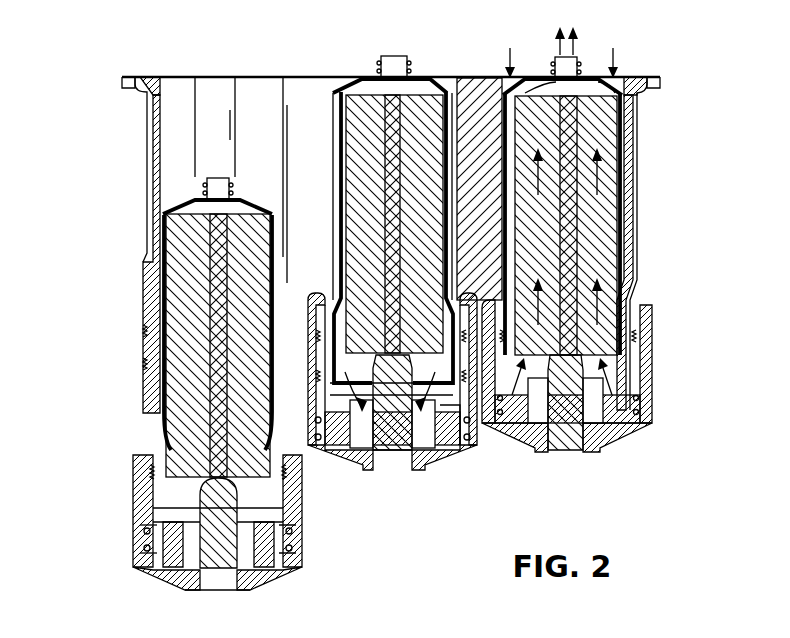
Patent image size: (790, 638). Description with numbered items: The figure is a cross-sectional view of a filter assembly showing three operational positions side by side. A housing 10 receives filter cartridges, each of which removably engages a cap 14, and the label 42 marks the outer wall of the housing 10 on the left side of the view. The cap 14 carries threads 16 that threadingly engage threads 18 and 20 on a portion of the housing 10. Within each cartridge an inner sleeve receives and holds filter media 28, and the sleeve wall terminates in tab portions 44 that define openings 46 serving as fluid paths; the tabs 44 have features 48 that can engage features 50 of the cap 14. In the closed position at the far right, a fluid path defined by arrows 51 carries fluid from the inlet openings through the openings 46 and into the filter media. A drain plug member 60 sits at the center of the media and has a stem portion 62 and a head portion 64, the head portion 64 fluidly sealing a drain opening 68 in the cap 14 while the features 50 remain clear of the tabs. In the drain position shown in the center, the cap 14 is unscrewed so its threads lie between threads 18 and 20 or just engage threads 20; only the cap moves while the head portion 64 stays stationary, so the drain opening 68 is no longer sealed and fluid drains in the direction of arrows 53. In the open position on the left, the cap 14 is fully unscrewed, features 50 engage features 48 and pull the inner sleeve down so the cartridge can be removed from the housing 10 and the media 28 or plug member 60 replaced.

The housing 10 is at (640, 249).
The cap 14 is at (300, 567).
The threads 16 is at (292, 494).
The threads 18 is at (143, 333).
The threads 20 is at (143, 365).
The filter media 28 is at (408, 63).
The outer housing wall 42 is at (158, 148).
The tab portions 44 is at (157, 518).
The openings 46 is at (460, 425).
The features 48 is at (158, 553).
The features 50 is at (294, 527).
The arrows 51 is at (617, 56).
The arrows 53 is at (389, 471).
The drain plug member 60 is at (540, 422).
The stem portion 62 is at (567, 225).
The head portion 64 is at (567, 430).
The drain opening 68 is at (287, 596).